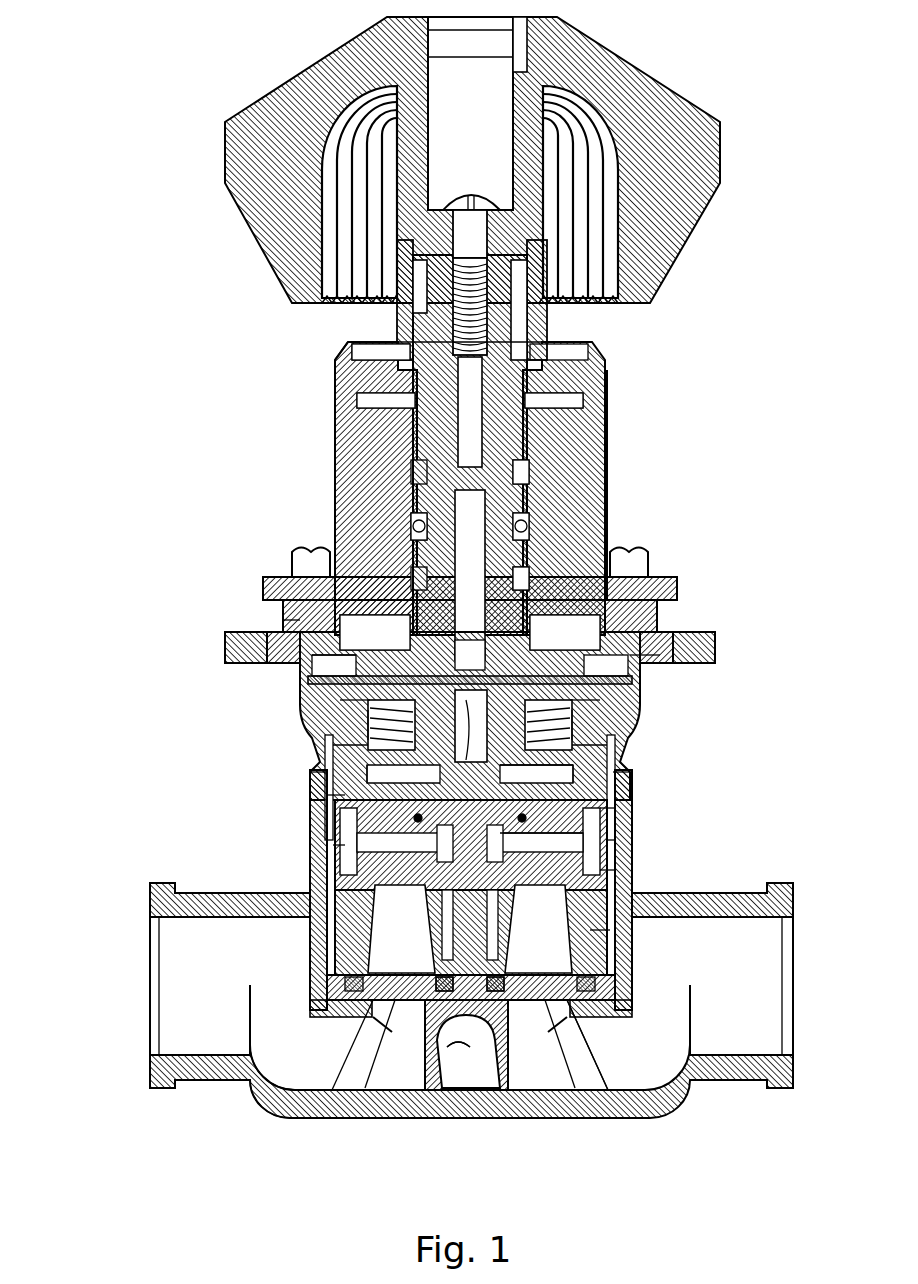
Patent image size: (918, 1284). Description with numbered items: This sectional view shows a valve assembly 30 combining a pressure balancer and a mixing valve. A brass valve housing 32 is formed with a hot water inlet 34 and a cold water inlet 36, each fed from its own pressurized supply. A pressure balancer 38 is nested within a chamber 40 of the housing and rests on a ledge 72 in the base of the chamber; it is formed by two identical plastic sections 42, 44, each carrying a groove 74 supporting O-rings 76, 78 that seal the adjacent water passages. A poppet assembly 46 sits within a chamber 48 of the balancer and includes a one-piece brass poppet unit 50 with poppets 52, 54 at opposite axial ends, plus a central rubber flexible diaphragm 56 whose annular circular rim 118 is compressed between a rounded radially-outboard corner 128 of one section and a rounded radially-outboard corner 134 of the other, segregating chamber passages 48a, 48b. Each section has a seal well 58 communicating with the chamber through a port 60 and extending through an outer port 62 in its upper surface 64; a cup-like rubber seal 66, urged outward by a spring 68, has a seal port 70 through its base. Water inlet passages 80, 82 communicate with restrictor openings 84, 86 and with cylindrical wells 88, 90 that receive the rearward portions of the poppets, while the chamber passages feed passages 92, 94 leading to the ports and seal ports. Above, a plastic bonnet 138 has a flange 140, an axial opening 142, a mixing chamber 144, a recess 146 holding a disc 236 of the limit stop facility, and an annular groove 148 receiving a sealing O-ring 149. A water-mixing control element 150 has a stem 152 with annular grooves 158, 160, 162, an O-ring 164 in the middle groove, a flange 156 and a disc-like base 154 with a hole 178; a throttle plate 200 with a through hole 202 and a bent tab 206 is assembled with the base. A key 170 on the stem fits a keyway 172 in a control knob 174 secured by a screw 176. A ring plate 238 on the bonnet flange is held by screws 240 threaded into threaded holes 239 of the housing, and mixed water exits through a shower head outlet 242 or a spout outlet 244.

The valve assembly 30 is at (104, 398).
The valve housing 32 is at (784, 1092).
The hot water inlet 34 is at (185, 1043).
The cold water inlet 36 is at (790, 908).
The pressure balancer 38 is at (622, 842).
The chamber 40 is at (330, 985).
The plastic section 42 is at (322, 994).
The plastic section 44 is at (562, 962).
The poppet assembly 46 is at (636, 862).
The chamber 48 is at (320, 940).
The chamber passage 48a is at (377, 1002).
The chamber passage 48b is at (545, 1002).
The poppet unit 50 is at (342, 832).
The poppet 52 is at (342, 846).
The poppet 54 is at (602, 872).
The flexible diaphragm 56 is at (602, 790).
The seal well 58 is at (146, 776).
The port 60 is at (302, 800).
The outer port 62 is at (773, 698).
The upper surface 64 is at (194, 740).
The rubber seal 66 is at (833, 742).
The spring 68 is at (232, 800).
The seal port 70 is at (262, 690).
The ledge 72 is at (652, 1058).
The groove 74 is at (533, 1174).
The O-ring 76 is at (265, 1086).
The O-ring 78 is at (602, 1020).
The water inlet passage 80 is at (345, 1076).
The water inlet passage 82 is at (585, 992).
The restrictor opening 84 is at (176, 888).
The restrictor opening 86 is at (602, 932).
The cylindrical well 88 is at (342, 822).
The cylindrical well 90 is at (620, 823).
The passage 92 is at (345, 796).
The passage 94 is at (622, 810).
The annular circular rim 118 is at (488, 1142).
The rounded radially-outboard corner 128 is at (292, 606).
The rounded radially-outboard corner 134 is at (486, 660).
The bonnet 138 is at (612, 441).
The flange 140 is at (682, 592).
The axial opening 142 is at (607, 385).
The chamber 144 is at (292, 612).
The recess 146 is at (607, 356).
The annular groove 148 is at (642, 652).
The O-ring 149 is at (702, 652).
The water-mixing control element 150 is at (412, 432).
The stem 152 is at (400, 400).
The disc-like base 154 is at (692, 620).
The flange 156 is at (645, 588).
The annular groove 158 is at (607, 422).
The annular groove 160 is at (607, 482).
The annular groove 162 is at (607, 530).
The O-ring 164 is at (412, 522).
The key 170 is at (405, 330).
The keyway 172 is at (415, 285).
The control knob 174 is at (662, 118).
The screw 176 is at (466, 190).
The hole 178 is at (282, 662).
The throttle plate 200 is at (602, 642).
The through hole 202 is at (302, 656).
The tab 206 is at (302, 642).
The disc 236 is at (562, 340).
The ring plate 238 is at (343, 352).
The threaded hole 239 is at (838, 680).
The screw 240 is at (254, 548).
The shower head outlet 242 is at (478, 1045).
The spout outlet 244 is at (420, 1118).